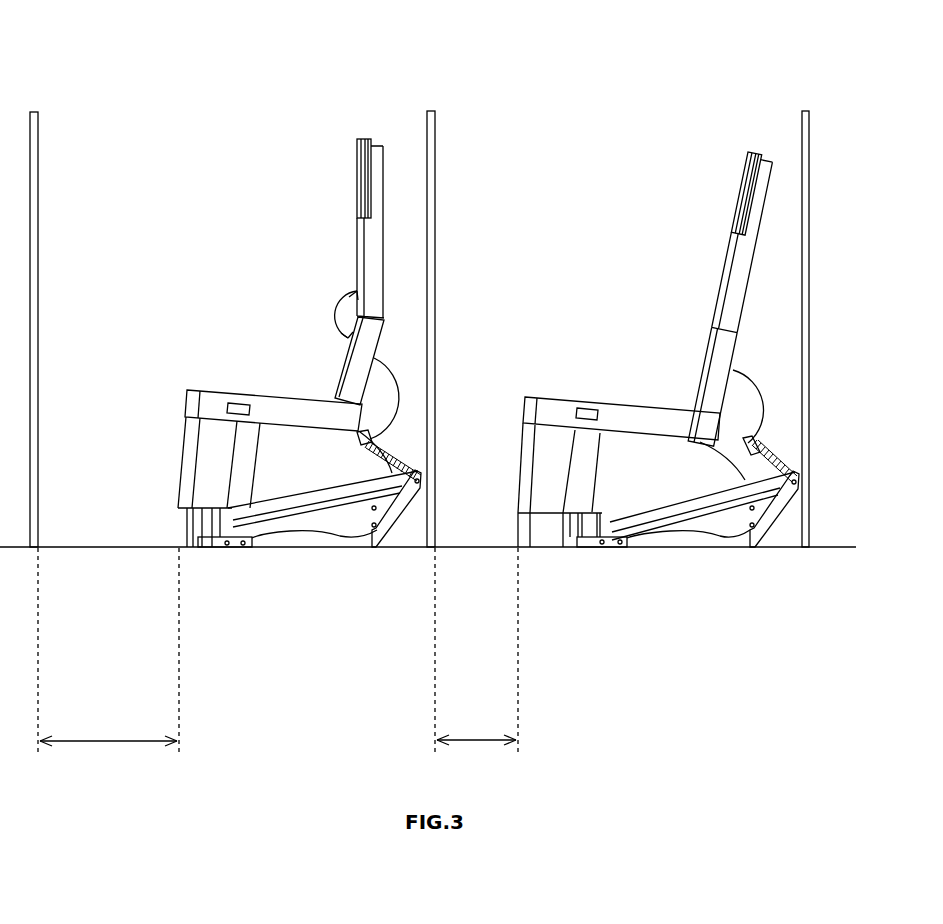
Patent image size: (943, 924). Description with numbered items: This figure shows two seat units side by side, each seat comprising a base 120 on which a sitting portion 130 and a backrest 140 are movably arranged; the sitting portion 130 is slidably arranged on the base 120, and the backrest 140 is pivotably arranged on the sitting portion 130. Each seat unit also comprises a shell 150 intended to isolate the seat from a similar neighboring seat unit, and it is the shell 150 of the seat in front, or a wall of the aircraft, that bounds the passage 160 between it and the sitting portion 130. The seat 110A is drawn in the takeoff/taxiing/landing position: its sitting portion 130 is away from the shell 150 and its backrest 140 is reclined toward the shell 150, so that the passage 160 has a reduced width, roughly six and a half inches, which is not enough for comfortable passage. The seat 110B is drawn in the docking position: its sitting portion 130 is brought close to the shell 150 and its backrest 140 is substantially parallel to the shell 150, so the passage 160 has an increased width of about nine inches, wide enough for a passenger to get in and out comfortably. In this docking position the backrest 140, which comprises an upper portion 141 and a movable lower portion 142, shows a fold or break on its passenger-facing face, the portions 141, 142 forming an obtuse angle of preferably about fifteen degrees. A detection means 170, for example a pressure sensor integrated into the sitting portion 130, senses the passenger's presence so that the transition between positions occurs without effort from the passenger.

The seat in TTL position 110A is at (635, 326).
The seat in docking position 110B is at (271, 344).
The base 120 is at (338, 522).
The sitting portion 130 is at (185, 400).
The backrest 140 is at (355, 193).
The upper portion 141 is at (373, 252).
The movable lower portion 142 is at (353, 388).
The shell 150 is at (40, 133).
The passage 160 is at (112, 487).
The detection means 170 is at (238, 402).